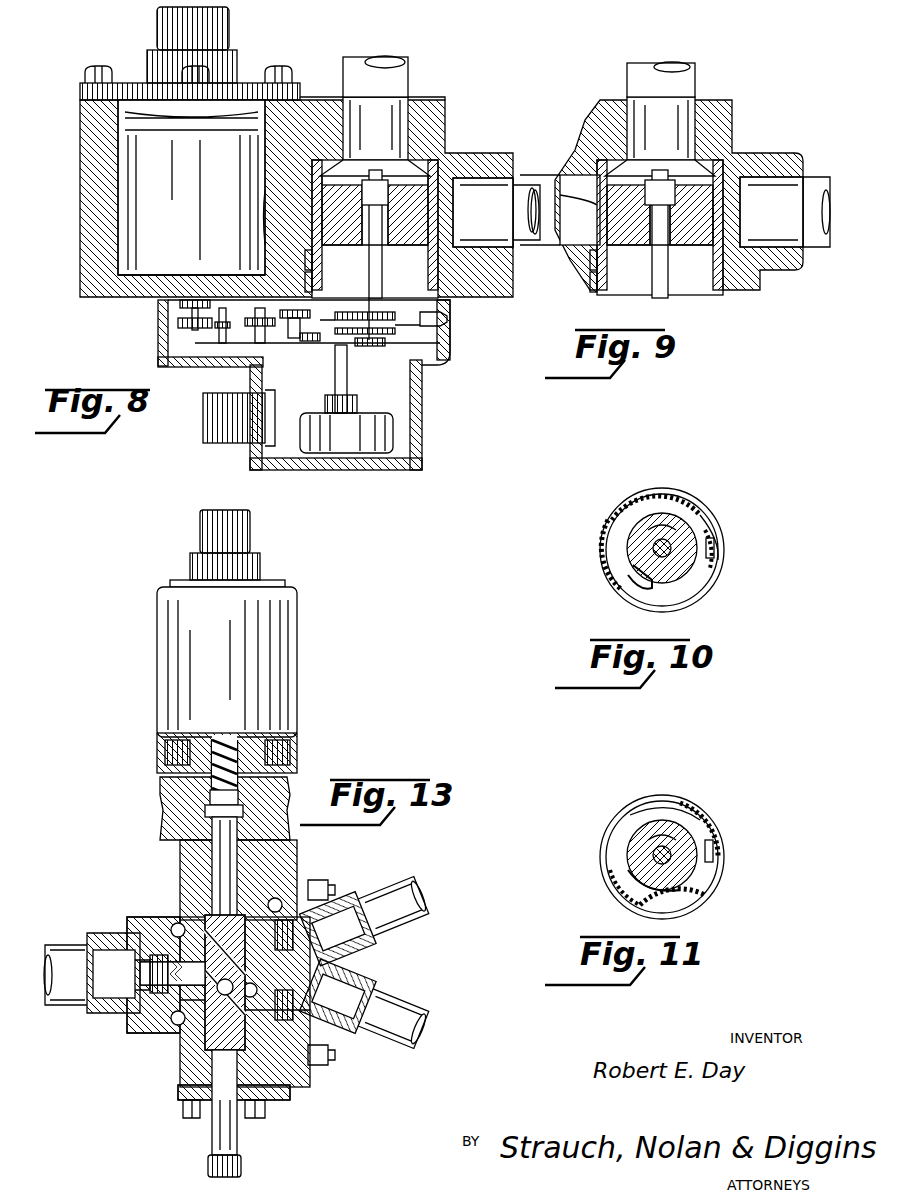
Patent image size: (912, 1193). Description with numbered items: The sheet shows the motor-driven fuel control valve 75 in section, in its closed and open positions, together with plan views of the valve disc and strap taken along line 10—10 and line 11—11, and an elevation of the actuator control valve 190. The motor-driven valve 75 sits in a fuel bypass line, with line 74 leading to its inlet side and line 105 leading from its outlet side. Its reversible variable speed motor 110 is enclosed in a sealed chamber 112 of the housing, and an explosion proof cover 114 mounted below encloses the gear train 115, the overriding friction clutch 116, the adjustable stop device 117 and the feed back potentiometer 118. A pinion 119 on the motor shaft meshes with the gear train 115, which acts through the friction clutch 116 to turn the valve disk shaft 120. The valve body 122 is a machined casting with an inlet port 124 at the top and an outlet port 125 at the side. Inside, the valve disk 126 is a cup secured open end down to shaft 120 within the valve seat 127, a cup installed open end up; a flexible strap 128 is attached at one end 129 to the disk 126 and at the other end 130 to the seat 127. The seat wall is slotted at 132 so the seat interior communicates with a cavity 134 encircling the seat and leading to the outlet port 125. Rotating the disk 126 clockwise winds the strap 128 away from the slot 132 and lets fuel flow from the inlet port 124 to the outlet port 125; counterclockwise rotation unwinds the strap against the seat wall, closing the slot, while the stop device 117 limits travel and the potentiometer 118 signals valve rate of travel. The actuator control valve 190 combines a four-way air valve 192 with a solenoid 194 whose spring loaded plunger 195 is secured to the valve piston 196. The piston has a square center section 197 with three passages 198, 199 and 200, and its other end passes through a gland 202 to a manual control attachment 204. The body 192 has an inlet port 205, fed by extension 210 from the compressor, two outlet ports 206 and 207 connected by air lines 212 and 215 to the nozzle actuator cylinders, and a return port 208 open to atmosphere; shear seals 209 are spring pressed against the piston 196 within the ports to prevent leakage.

In FIG. 8, the line 74 is at (400, 70).
In FIG. 9, the line 74 is at (690, 78).
In FIG. 8, the motor-driven valve 75 is at (148, 270).
In FIG. 9, the line 105 is at (535, 180).
In FIG. 8, the reversible variable speed motor 110 is at (205, 198).
In FIG. 8, the sealed chamber 112 is at (118, 178).
In FIG. 8, the explosion proof cover 114 is at (415, 455).
In FIG. 8, the gear train 115 is at (282, 300).
In FIG. 8, the overriding friction clutch 116 is at (388, 340).
In FIG. 8, the adjustable stop device 117 is at (444, 328).
In FIG. 8, the feed back potentiometer 118 is at (345, 453).
In FIG. 8, the pinion 119 is at (168, 340).
In FIG. 8, the valve disk shaft 120 is at (375, 262).
In FIG. 9, the valve disk shaft 120 is at (658, 285).
In FIG. 10, the valve disk shaft 120 is at (660, 530).
In FIG. 11, the valve disk shaft 120 is at (650, 835).
In FIG. 8, the valve body 122 is at (432, 157).
In FIG. 9, the valve body 122 is at (726, 162).
In FIG. 8, the inlet port 124 is at (394, 138).
In FIG. 9, the inlet port 124 is at (661, 129).
In FIG. 8, the outlet port 125 is at (510, 225).
In FIG. 9, the outlet port 125 is at (771, 212).
In FIG. 8, the valve disk 126 is at (340, 175).
In FIG. 9, the valve disk 126 is at (620, 170).
In FIG. 10, the valve disk 126 is at (685, 510).
In FIG. 11, the valve disk 126 is at (690, 810).
In FIG. 8, the valve seat 127 is at (306, 282).
In FIG. 9, the valve seat 127 is at (592, 285).
In FIG. 10, the valve seat 127 is at (718, 535).
In FIG. 11, the valve seat 127 is at (620, 898).
In FIG. 8, the flexible strap 128 is at (340, 185).
In FIG. 9, the flexible strap 128 is at (625, 185).
In FIG. 10, the flexible strap 128 is at (610, 545).
In FIG. 11, the flexible strap 128 is at (690, 895).
In FIG. 10, the end 129 is at (633, 588).
In FIG. 11, the end 129 is at (627, 870).
In FIG. 10, the end 130 is at (716, 555).
In FIG. 11, the end 130 is at (716, 855).
In FIG. 8, the slot 132 is at (306, 260).
In FIG. 9, the slot 132 is at (592, 262).
In FIG. 10, the slot 132 is at (608, 518).
In FIG. 11, the slot 132 is at (615, 820).
In FIG. 8, the cavity 134 is at (280, 210).
In FIG. 9, the cavity 134 is at (580, 215).
In FIG. 8, the line 10— 10 is at (284, 214).
In FIG. 9, the line 11— 11 is at (586, 217).
In FIG. 13, the actuator control valve 190 is at (248, 843).
In FIG. 13, the four-way air valve 192 is at (175, 850).
In FIG. 13, the solenoid 194 is at (185, 650).
In FIG. 13, the plunger 195 is at (262, 775).
In FIG. 13, the valve piston 196 is at (228, 858).
In FIG. 13, the square center section 197 is at (215, 1060).
In FIG. 13, the passage 198 is at (205, 940).
In FIG. 13, the passage 199 is at (200, 1040).
In FIG. 13, the passage 200 is at (262, 1050).
In FIG. 13, the gland 202 is at (262, 1100).
In FIG. 13, the manual control attachment 204 is at (242, 1170).
In FIG. 13, the inlet port 205 is at (105, 1015).
In FIG. 13, the outlet port 206 is at (330, 1055).
In FIG. 13, the outlet port 207 is at (330, 886).
In FIG. 13, the return port 208 is at (180, 1015).
In FIG. 13, the shear seals 209 is at (160, 955).
In FIG. 13, the extension 210 is at (68, 950).
In FIG. 13, the air line 212 is at (398, 1012).
In FIG. 13, the air line 215 is at (378, 900).